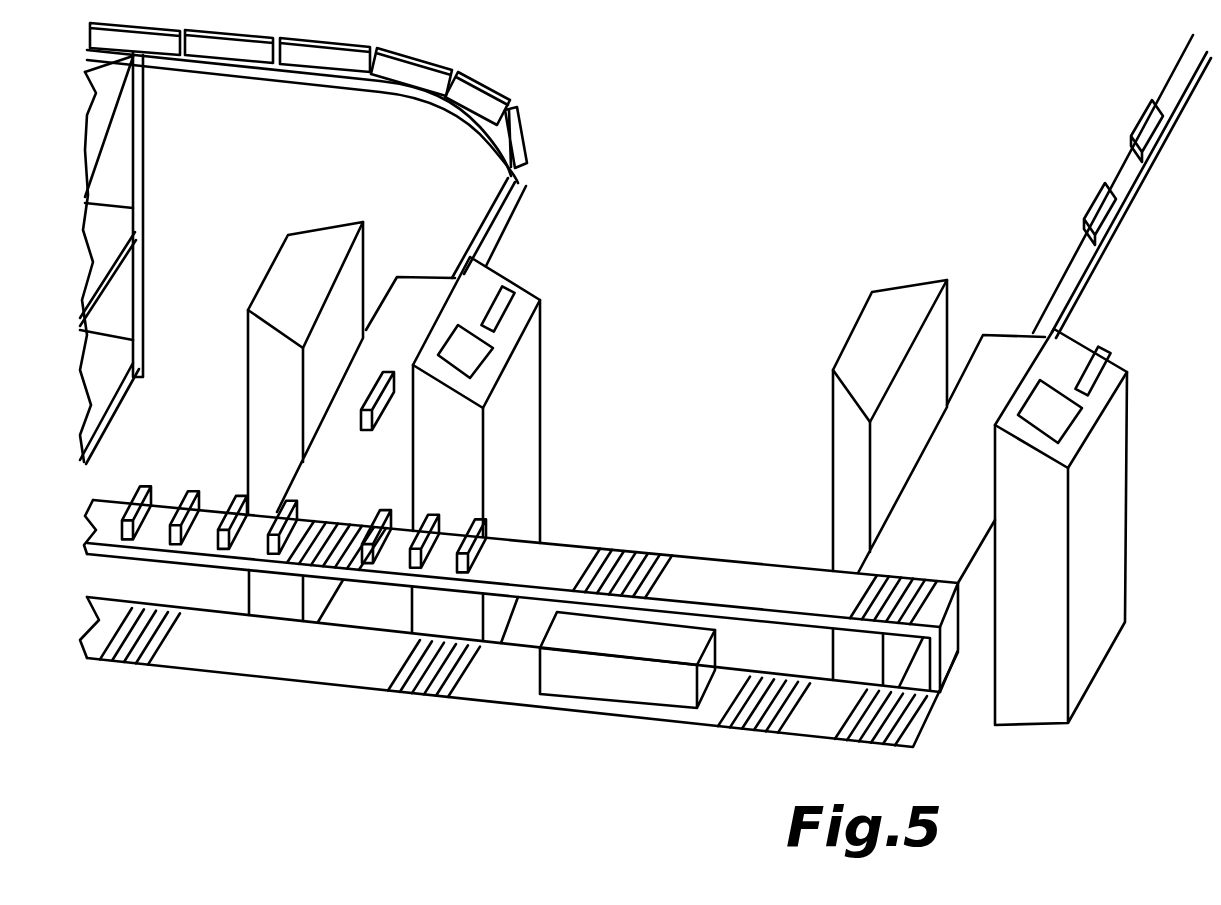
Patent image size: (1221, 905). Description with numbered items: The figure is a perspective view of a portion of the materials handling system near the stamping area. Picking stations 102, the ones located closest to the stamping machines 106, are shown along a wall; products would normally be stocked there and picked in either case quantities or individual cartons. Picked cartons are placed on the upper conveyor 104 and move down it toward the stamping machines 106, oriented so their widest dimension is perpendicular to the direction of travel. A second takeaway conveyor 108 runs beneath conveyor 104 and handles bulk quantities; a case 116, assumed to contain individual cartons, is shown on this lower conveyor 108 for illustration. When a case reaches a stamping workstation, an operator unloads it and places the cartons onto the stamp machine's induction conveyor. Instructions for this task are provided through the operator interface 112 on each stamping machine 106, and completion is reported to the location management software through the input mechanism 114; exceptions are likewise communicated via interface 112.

The picking station 102 is at (143, 168).
The conveyor 104 is at (118, 500).
The stamping machine 106 is at (842, 440).
The takeaway conveyor 108 is at (165, 668).
The operator interface 112 is at (458, 343).
The input mechanism 114 is at (506, 300).
The case 116 is at (597, 683).